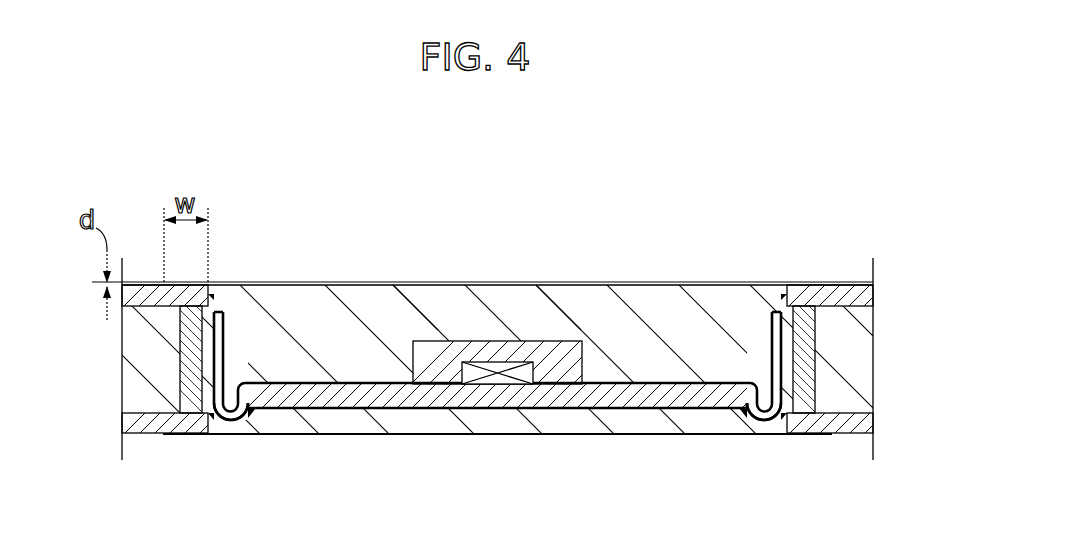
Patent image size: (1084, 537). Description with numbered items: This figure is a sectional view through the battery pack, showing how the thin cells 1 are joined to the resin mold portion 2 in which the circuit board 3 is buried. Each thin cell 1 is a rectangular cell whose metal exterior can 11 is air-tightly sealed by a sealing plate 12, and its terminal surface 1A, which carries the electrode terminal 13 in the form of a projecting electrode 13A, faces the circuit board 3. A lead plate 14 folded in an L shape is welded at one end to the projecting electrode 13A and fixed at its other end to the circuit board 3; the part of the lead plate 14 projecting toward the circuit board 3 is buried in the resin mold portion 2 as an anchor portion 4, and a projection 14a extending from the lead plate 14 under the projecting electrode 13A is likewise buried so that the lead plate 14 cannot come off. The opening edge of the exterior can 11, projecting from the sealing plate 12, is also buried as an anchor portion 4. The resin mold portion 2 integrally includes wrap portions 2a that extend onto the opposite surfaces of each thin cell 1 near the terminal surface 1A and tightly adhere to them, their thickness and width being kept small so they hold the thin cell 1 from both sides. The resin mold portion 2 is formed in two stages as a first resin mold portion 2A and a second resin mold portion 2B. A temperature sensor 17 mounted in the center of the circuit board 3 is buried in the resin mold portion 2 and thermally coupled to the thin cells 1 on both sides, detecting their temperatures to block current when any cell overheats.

The thin cell 1 is at (155, 281).
The terminal surface 1A is at (196, 360).
The resin mold portion 2 is at (448, 176).
The first resin mold portion 2A is at (464, 342).
The second resin mold portion 2B is at (583, 318).
The wrap portion 2a is at (182, 286).
The circuit board 3 is at (558, 388).
The anchor portion 4 is at (213, 294).
The exterior can 11 is at (140, 282).
The sealing plate 12 is at (180, 362).
The electrode terminal 13 is at (497, 257).
The projecting electrode 13A is at (222, 322).
The lead plate 14 is at (238, 338).
The projection 14a is at (233, 440).
The temperature sensor 17 is at (505, 385).